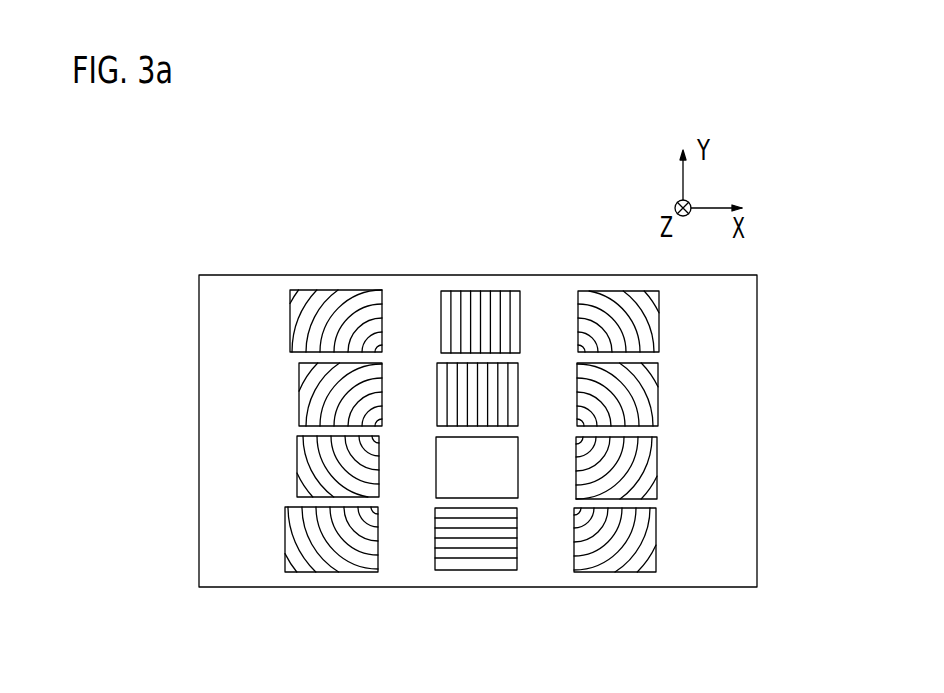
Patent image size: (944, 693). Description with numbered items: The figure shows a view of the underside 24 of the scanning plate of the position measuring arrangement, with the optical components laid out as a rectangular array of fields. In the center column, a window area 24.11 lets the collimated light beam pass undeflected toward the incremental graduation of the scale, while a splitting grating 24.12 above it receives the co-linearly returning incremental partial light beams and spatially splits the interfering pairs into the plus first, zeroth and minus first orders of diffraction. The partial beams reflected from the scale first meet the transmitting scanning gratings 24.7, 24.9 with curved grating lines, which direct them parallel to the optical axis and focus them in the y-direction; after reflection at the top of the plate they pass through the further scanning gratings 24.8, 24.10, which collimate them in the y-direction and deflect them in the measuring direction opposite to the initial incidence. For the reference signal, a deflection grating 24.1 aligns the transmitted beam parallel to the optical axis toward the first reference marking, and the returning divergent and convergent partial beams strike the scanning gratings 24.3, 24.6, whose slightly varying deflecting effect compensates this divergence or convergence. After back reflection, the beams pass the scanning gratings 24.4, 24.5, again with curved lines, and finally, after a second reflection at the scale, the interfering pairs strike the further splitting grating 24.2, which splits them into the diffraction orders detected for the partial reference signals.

The underside of the scanning plate 24 is at (757, 522).
The deflection grating 24.1 is at (478, 557).
The splitting grating 24.2 is at (478, 310).
The scanning grating 24.3 is at (303, 543).
The scanning grating 24.4 is at (303, 324).
The scanning grating 24.5 is at (642, 320).
The scanning grating 24.6 is at (642, 537).
The scanning grating 24.7 is at (308, 470).
The scanning grating 24.8 is at (308, 395).
The scanning grating 24.9 is at (642, 462).
The scanning grating 24.10 is at (642, 400).
The window area 24.11 is at (448, 477).
The splitting grating 24.12 is at (457, 405).